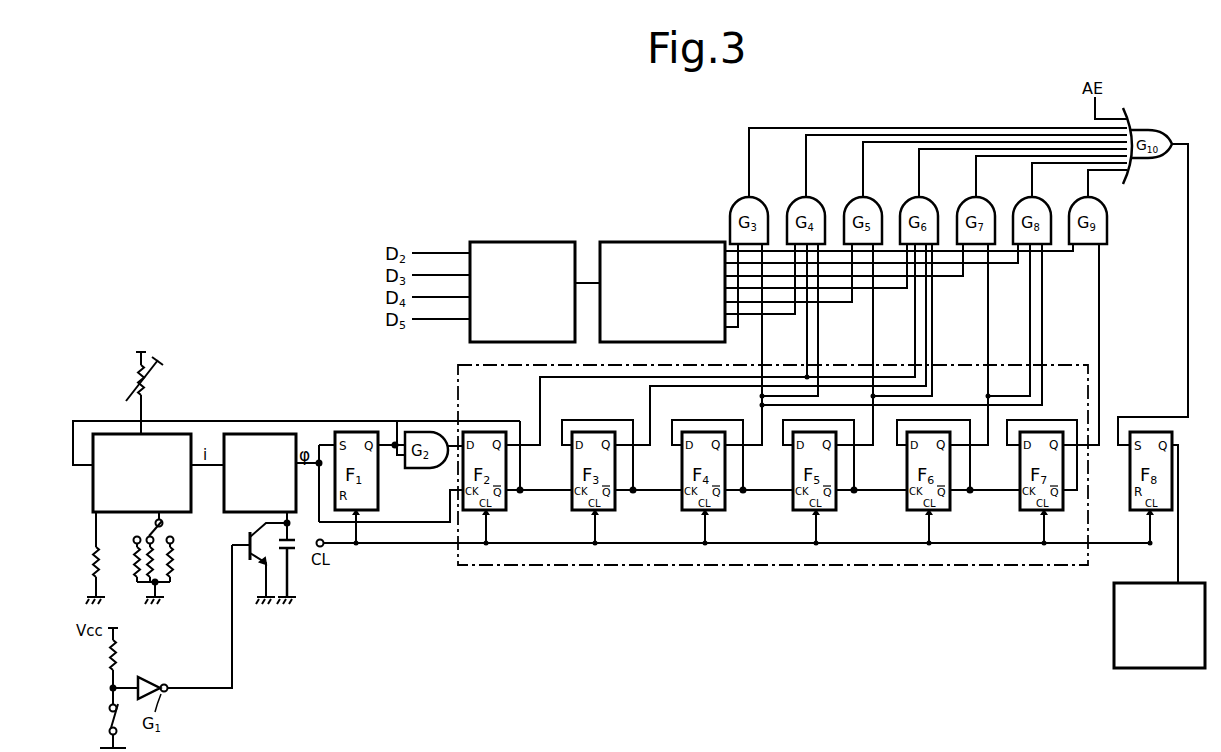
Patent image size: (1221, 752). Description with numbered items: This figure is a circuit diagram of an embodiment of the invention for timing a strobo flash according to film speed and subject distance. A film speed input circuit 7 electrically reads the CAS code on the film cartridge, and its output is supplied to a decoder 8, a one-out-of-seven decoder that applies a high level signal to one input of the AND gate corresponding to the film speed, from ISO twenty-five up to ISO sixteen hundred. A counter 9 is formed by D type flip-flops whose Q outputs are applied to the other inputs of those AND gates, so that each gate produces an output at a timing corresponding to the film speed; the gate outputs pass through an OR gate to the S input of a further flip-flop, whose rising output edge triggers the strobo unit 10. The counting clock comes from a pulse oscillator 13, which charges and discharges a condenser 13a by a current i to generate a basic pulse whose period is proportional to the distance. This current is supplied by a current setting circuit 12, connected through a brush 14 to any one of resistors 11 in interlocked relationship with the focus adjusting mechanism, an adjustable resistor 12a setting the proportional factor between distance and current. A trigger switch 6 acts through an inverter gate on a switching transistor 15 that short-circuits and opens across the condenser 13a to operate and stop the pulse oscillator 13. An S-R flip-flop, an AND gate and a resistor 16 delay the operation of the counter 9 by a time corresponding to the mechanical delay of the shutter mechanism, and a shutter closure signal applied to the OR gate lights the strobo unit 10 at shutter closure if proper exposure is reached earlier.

The trigger switch 6 is at (108, 719).
The film speed input circuit 7 is at (489, 242).
The decoder 8 is at (621, 242).
The counter 9 is at (852, 566).
The strobo unit 10 is at (1163, 668).
The resistors 11 is at (170, 583).
The current setting circuit 12 is at (178, 434).
The adjustable resistor 12a is at (135, 374).
The pulse oscillator 13 is at (277, 434).
The condenser 13a is at (299, 572).
The brush 14 is at (167, 528).
The switching transistor 15 is at (249, 562).
The resistor 16 is at (93, 559).